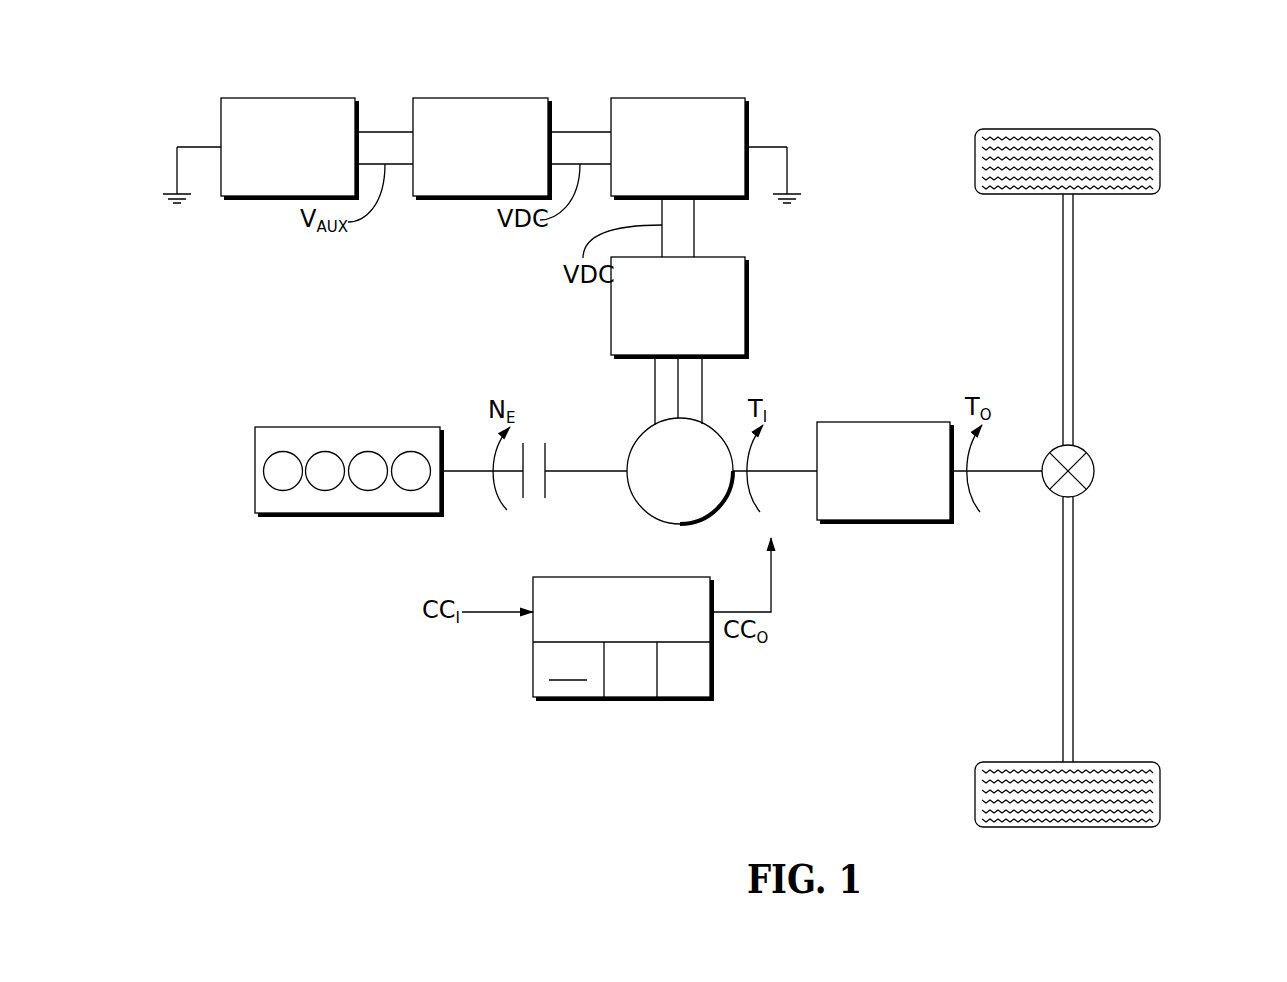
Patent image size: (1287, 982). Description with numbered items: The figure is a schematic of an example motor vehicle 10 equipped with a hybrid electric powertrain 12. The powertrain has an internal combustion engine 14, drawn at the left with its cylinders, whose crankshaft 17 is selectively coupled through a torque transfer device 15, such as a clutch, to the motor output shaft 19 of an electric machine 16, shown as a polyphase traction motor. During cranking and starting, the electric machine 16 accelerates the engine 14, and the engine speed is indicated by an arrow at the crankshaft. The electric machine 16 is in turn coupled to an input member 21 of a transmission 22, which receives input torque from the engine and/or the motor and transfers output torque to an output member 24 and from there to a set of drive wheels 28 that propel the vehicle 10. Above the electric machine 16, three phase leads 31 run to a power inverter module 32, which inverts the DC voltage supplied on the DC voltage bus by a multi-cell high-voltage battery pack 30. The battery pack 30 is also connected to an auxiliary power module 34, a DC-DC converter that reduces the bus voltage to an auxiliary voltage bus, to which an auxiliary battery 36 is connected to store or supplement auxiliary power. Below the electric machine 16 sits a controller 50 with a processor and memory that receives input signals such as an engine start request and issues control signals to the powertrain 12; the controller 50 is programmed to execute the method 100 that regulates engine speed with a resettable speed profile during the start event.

The motor vehicle 10 is at (1120, 78).
The hybrid electric powertrain 12 is at (838, 282).
The internal combustion engine 14 is at (347, 427).
The torque transfer device 15 is at (535, 435).
The electric machine 16 is at (678, 523).
The crankshaft 17 is at (473, 471).
The motor output shaft 19 is at (557, 471).
The input member 21 is at (782, 471).
The transmission 22 is at (883, 422).
The output member 24 is at (988, 471).
The drive wheels 28 is at (1160, 162).
The high-voltage battery pack 30 is at (678, 98).
The phase leads 31 is at (702, 387).
The power inverter module 32 is at (745, 307).
The auxiliary power module 34 is at (482, 98).
The auxiliary battery 36 is at (288, 98).
The controller 50 is at (598, 655).
The method 100 is at (533, 668).